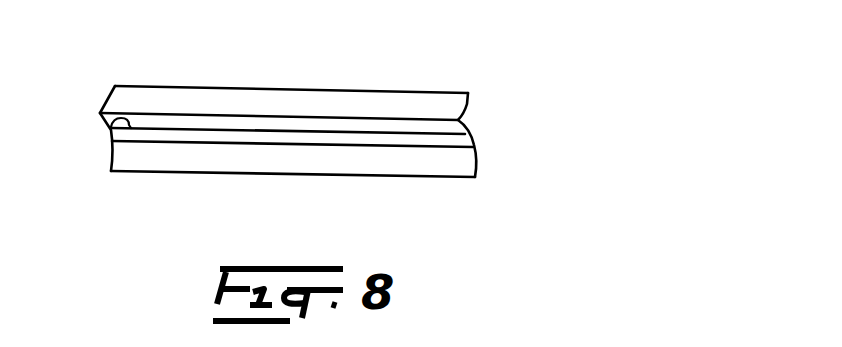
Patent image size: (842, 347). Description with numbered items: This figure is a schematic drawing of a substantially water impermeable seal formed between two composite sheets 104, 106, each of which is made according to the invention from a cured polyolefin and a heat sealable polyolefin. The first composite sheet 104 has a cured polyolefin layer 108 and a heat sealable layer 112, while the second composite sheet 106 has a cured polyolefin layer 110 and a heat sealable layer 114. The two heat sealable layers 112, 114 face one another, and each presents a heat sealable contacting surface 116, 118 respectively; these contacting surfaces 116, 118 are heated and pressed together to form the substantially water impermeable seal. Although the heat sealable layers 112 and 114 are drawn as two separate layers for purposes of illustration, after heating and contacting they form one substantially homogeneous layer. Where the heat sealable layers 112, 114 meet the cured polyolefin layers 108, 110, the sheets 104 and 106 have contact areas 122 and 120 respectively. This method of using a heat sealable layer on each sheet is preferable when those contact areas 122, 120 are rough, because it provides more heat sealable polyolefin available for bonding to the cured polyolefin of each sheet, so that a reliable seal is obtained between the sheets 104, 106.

The composite sheet 104 is at (368, 91).
The composite sheet 106 is at (331, 174).
The cured polyolefin layer 108 is at (288, 100).
The cured polyolefin layer 110 is at (247, 162).
The heat sealable layer 112 is at (460, 124).
The heat sealable layer 114 is at (470, 142).
The heat sealable contacting surface 116 is at (162, 128).
The heat sealable contacting surface 118 is at (112, 131).
The contact area 120 is at (405, 150).
The contact area 122 is at (230, 113).